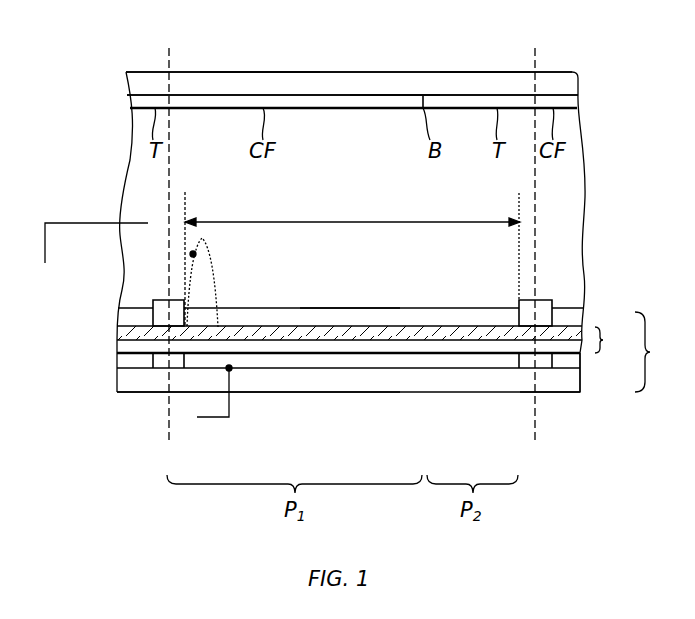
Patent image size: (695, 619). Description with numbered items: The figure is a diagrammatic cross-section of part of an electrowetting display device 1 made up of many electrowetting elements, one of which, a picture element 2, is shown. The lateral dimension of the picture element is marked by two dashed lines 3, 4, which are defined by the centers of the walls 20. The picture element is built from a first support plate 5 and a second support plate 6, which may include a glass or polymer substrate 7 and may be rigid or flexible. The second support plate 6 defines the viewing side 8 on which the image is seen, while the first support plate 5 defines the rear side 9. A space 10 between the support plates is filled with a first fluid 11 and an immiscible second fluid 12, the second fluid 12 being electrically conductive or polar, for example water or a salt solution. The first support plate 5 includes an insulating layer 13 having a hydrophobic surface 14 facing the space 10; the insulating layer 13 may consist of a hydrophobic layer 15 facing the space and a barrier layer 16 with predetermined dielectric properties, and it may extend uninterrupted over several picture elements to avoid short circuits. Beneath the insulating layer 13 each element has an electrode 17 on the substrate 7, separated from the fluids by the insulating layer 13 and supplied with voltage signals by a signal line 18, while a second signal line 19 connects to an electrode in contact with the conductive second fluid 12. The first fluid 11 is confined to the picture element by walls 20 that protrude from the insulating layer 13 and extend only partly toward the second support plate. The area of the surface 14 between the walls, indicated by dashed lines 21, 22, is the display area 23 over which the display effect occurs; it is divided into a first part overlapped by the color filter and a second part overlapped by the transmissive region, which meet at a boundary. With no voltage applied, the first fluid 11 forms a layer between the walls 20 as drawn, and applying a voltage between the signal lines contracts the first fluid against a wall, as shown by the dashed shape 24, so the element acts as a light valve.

The electrowetting display device 1 is at (648, 45).
The picture element 2 is at (341, 37).
The dashed line 3 is at (169, 60).
The dashed line 4 is at (535, 55).
The first support plate 5 is at (392, 352).
The second support plate 6 is at (484, 82).
The substrate 7 is at (562, 385).
The viewing side 8 is at (256, 72).
The rear side 9 is at (313, 392).
The space 10 is at (398, 134).
The first fluid 11 is at (473, 315).
The second fluid 12 is at (578, 197).
The insulating layer 13 is at (614, 341).
The surface 14 is at (407, 327).
The hydrophobic layer 15 is at (344, 340).
The barrier layer 16 is at (283, 345).
The electrode 17 is at (385, 360).
The signal line 18 is at (213, 417).
The second signal line 19 is at (65, 222).
The walls 20 is at (155, 300).
The dashed line 21 is at (187, 192).
The dashed line 22 is at (519, 193).
The display area 23 is at (352, 211).
The dashed shape 24 is at (203, 250).